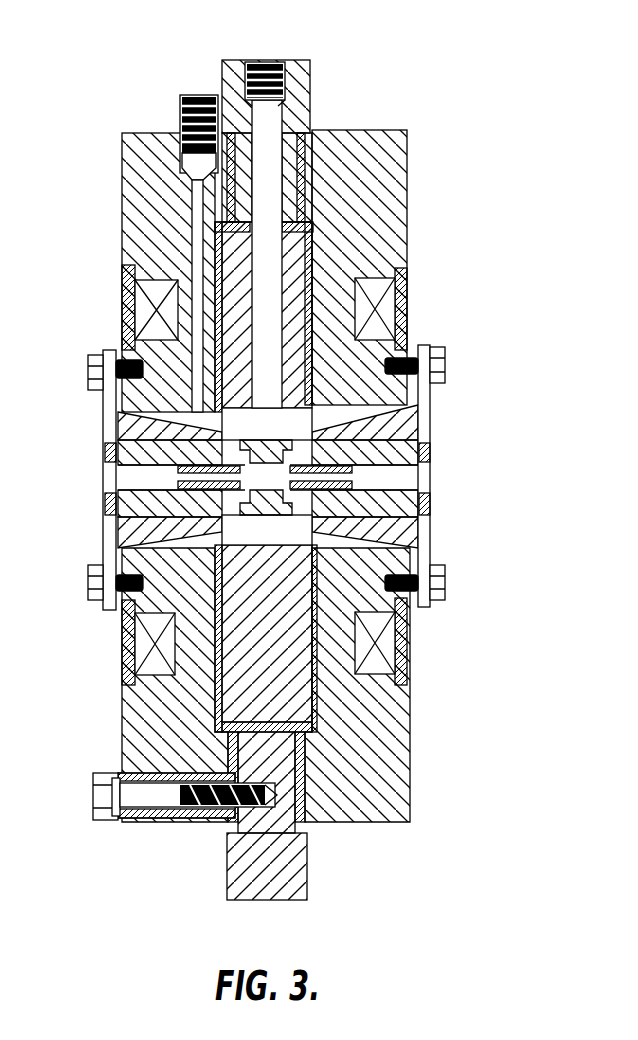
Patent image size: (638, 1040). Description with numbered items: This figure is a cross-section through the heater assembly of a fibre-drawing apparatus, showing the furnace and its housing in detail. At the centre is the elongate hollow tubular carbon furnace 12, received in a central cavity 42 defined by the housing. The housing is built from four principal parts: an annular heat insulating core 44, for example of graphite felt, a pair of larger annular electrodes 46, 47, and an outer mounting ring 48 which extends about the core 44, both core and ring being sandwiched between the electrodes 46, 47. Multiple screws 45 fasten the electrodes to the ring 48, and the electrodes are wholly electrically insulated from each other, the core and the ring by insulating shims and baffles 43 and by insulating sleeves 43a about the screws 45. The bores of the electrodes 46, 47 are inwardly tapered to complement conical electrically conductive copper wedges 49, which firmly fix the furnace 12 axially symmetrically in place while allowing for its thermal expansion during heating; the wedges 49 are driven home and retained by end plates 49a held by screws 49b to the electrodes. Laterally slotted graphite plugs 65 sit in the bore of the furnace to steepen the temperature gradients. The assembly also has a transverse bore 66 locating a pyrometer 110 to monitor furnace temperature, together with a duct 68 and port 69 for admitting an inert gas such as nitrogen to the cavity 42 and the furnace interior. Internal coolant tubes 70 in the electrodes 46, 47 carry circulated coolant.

The pyrometer 110 is at (273, 60).
The port 69 is at (181, 107).
The transverse bore 66 is at (272, 125).
The insulating shims and baffles 43 is at (305, 183).
The duct 68 is at (193, 205).
The internal coolant tubes 70 is at (152, 295).
The screws 49b is at (445, 372).
The end plates 49a is at (428, 408).
The conical electrically conductive copper wedges 49 is at (125, 415).
The laterally slotted graphite plugs 65 is at (225, 478).
The carbon furnace 12 is at (385, 507).
The cavity 42 is at (250, 517).
The annular heat insulating core 44 is at (240, 682).
The annular electrode 46 is at (142, 733).
The annular electrode 47 is at (373, 760).
The outer mounting ring 48 is at (278, 873).
The screws 45 is at (142, 793).
The insulating sleeves 43a is at (177, 822).